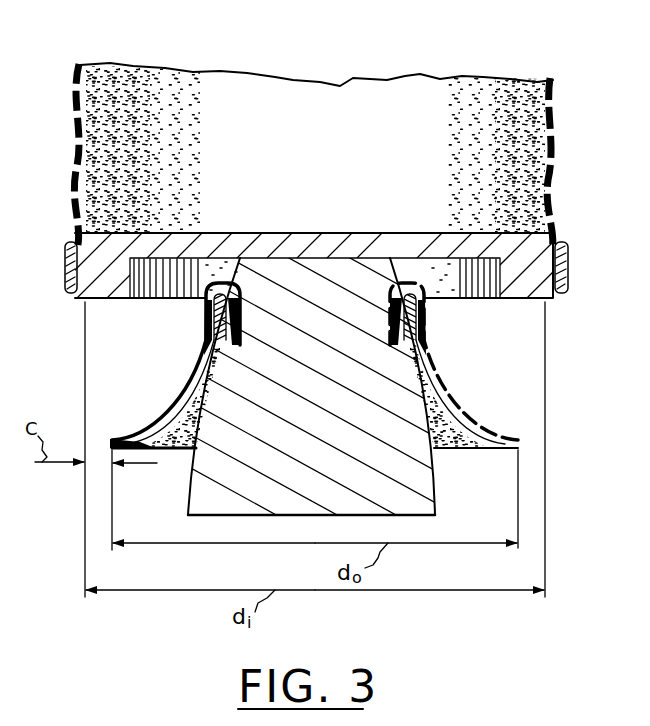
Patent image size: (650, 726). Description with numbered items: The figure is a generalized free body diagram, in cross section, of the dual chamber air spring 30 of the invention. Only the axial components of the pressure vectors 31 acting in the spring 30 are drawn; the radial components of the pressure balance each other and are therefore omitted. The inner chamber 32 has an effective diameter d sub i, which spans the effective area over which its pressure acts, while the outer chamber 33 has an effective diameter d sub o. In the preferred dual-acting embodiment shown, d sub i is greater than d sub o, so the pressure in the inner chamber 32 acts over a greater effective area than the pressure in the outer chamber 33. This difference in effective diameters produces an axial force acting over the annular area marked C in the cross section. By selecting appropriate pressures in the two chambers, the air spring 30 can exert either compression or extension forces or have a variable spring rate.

The air spring 30 is at (347, 76).
The pressure vectors 31 is at (98, 231).
The inner chamber 32 is at (406, 140).
The outer chamber 33 is at (170, 262).